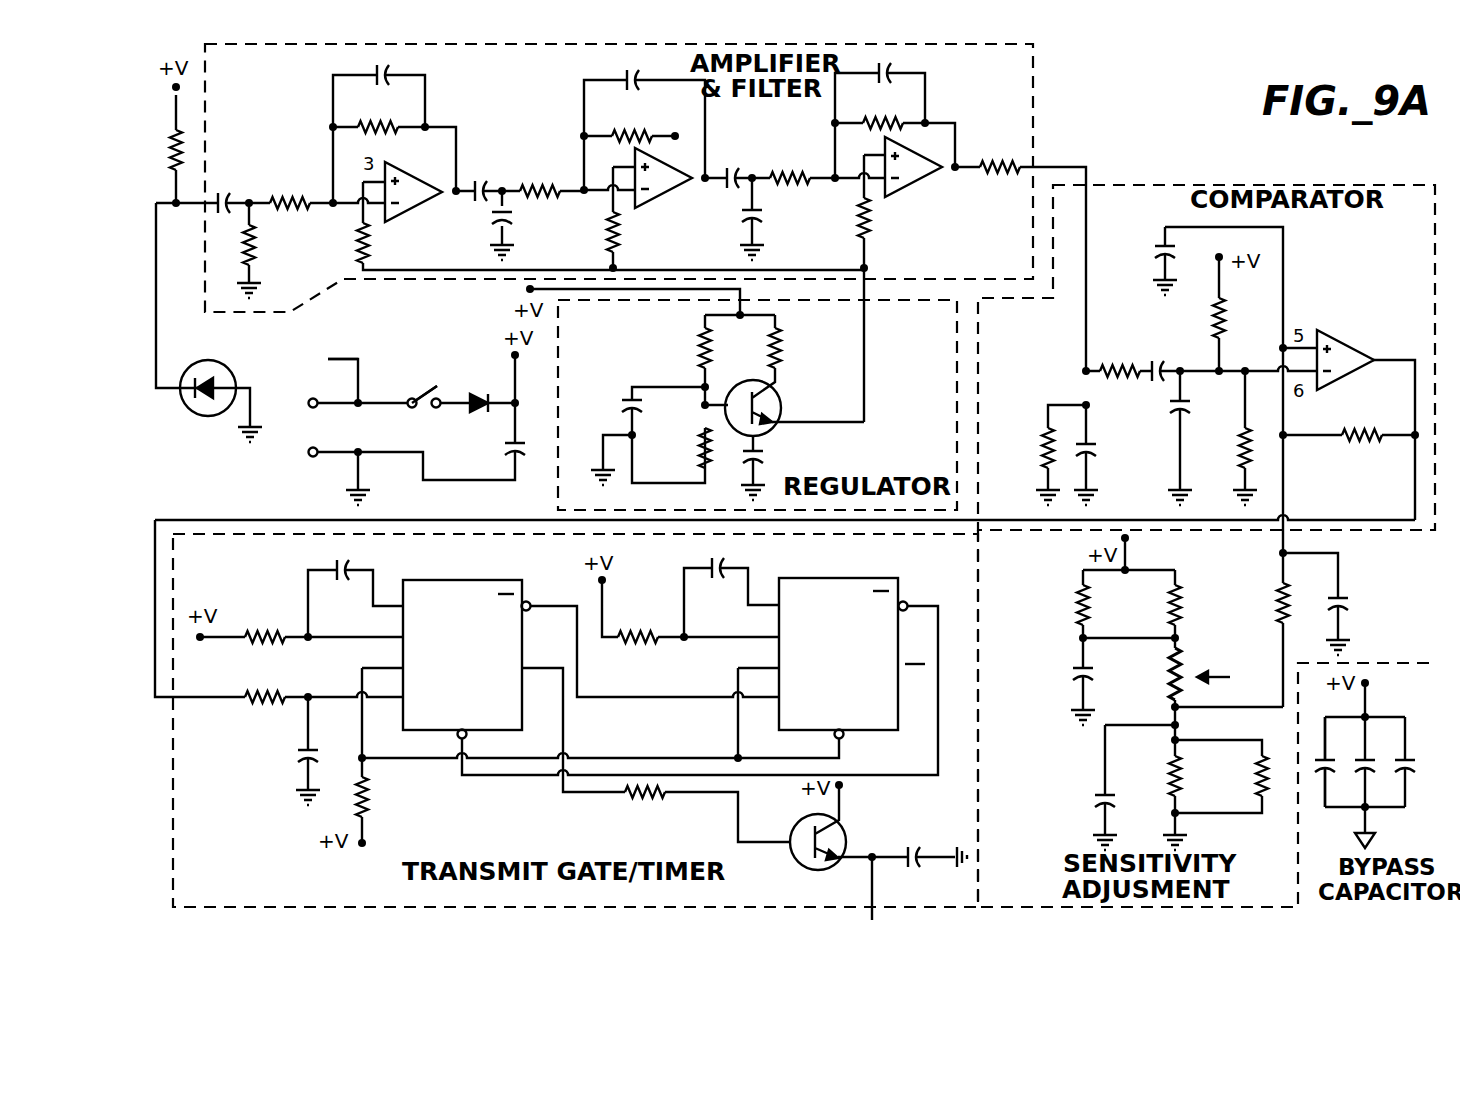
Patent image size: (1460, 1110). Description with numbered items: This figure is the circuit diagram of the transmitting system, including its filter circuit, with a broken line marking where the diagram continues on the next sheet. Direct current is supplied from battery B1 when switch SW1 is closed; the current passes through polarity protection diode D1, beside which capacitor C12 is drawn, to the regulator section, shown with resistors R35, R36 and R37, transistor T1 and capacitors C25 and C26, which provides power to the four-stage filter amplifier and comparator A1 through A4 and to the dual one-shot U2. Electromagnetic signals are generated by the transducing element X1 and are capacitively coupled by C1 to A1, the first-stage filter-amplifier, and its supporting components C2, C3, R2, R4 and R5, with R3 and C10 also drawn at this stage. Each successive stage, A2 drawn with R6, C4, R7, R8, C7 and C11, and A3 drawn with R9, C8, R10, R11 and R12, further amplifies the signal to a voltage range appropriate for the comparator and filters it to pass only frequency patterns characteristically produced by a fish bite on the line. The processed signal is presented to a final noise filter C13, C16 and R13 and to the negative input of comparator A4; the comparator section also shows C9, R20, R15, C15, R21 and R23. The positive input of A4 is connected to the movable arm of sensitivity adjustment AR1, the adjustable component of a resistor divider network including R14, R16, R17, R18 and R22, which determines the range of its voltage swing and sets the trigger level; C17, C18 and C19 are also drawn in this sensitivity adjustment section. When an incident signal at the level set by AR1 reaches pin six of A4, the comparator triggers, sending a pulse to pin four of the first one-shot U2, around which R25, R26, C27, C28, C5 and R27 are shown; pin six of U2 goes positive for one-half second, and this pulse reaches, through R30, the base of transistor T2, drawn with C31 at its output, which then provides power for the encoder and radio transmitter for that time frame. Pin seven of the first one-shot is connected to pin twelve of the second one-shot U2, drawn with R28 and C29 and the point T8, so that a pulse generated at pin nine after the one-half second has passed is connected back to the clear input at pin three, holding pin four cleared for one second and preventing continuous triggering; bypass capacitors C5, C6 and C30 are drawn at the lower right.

The coupling capacitor C1 is at (223, 187).
The resistor R2 is at (290, 186).
The resistor R3 is at (270, 243).
The capacitor C2 is at (364, 68).
The resistor R5 is at (378, 113).
The first-stage filter-amplifier A1 is at (413, 198).
The resistor R4 is at (383, 243).
The capacitor C3 is at (481, 175).
The capacitor C10 is at (527, 228).
The resistor R6 is at (540, 173).
The capacitor C4 is at (613, 71).
The resistor R7 is at (632, 121).
The second-stage filter-amplifier A2 is at (664, 185).
The resistor R8 is at (631, 232).
The capacitor C7 is at (731, 162).
The capacitor C11 is at (779, 220).
The resistor R9 is at (790, 162).
The capacitor C8 is at (900, 64).
The resistor R10 is at (884, 110).
The third-stage filter-amplifier A3 is at (916, 172).
The resistor R11 is at (889, 218).
The resistor R12 is at (1001, 151).
The transducing element X1 is at (208, 371).
The battery B1 is at (319, 360).
The switch SW1 is at (411, 381).
The diode D1 is at (477, 388).
The capacitor C12 is at (489, 451).
The resistor R35 is at (677, 348).
The resistor R36 is at (799, 348).
The transistor T1 is at (769, 406).
The capacitor C25 is at (607, 406).
The resistor R37 is at (680, 448).
The capacitor C26 is at (779, 461).
The capacitor C9 is at (1146, 253).
The resistor R20 is at (1243, 318).
The noise filter resistor R13 is at (1120, 355).
The noise filter capacitor C13 is at (1171, 356).
The noise filter capacitor C16 is at (1154, 410).
The resistor R15 is at (1023, 448).
The capacitor C15 is at (1111, 451).
The resistor R21 is at (1220, 448).
The comparator A4 is at (1345, 366).
The resistor R23 is at (1358, 452).
The resistor R25 is at (264, 620).
The resistor R26 is at (264, 680).
The capacitor C27 is at (320, 561).
The capacitor C28 is at (284, 758).
The capacitor C5 is at (804, 762).
The resistor R27 is at (387, 797).
The dual one-shot U2 is at (655, 652).
The terminal T8 is at (959, 593).
The resistor R28 is at (638, 620).
The capacitor C29 is at (696, 558).
The resistor R30 is at (645, 809).
The transistor T2 is at (814, 827).
The capacitor C31 is at (919, 867).
The resistor divider network resistor R14 is at (1058, 605).
The resistor divider network resistor R16 is at (1150, 605).
The resistor divider network resistor R17 is at (1258, 603).
The capacitor C17 is at (1362, 606).
The capacitor C18 is at (1058, 676).
The sensitivity adjustment AR1 is at (1203, 672).
The capacitor C19 is at (1080, 796).
The resistor divider network resistor R18 is at (1151, 776).
The resistor divider network resistor R22 is at (1236, 776).
The capacitor C6 is at (1376, 755).
The capacitor C30 is at (1422, 755).